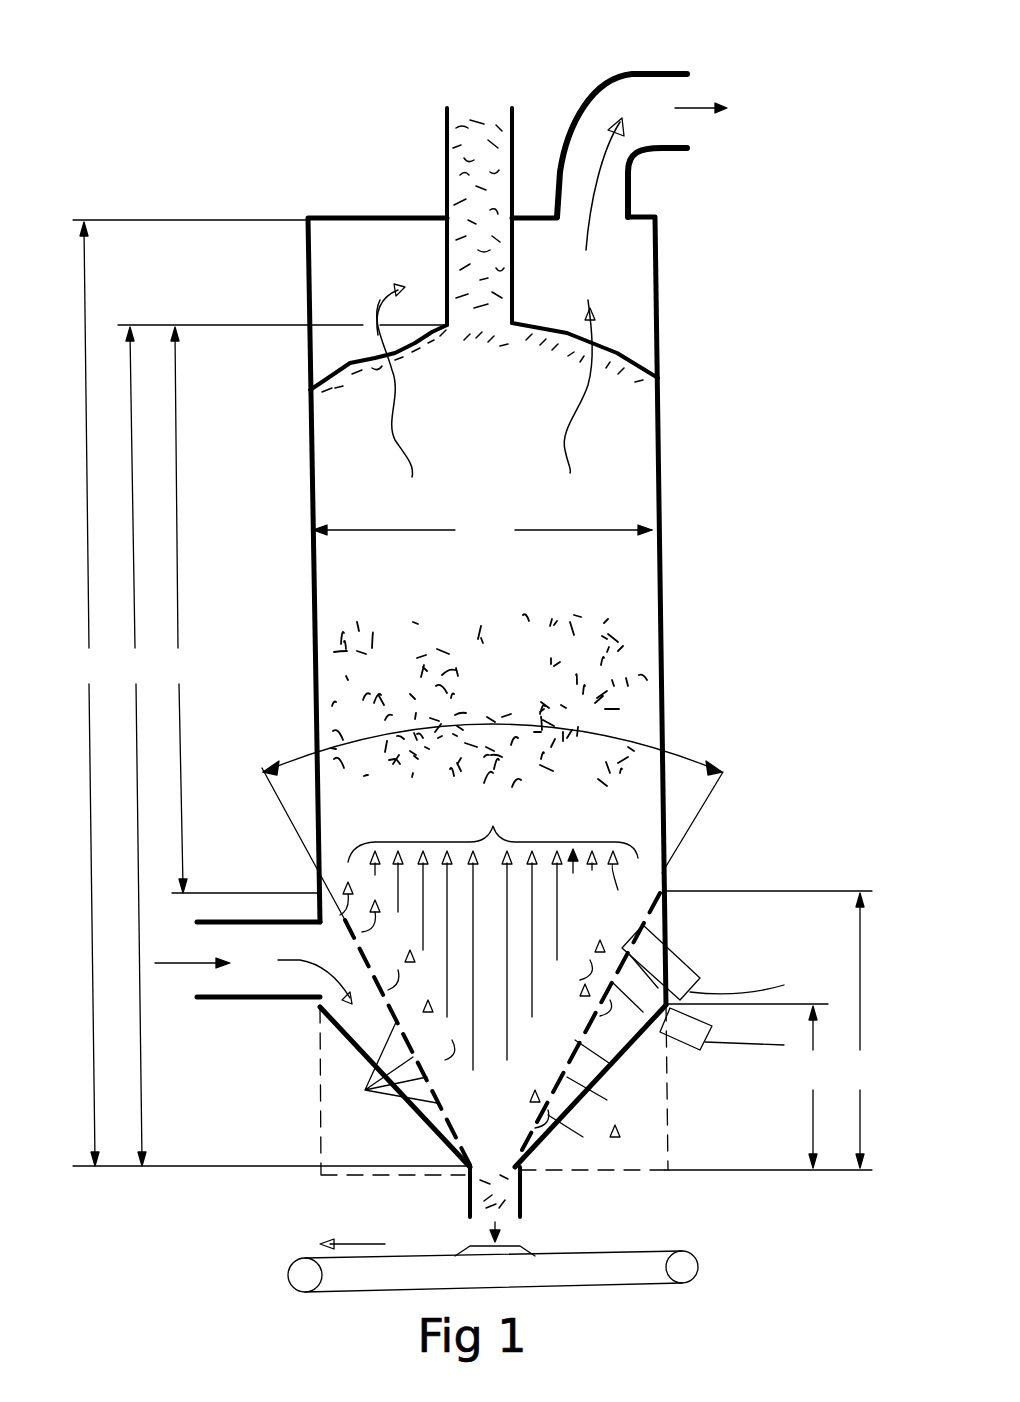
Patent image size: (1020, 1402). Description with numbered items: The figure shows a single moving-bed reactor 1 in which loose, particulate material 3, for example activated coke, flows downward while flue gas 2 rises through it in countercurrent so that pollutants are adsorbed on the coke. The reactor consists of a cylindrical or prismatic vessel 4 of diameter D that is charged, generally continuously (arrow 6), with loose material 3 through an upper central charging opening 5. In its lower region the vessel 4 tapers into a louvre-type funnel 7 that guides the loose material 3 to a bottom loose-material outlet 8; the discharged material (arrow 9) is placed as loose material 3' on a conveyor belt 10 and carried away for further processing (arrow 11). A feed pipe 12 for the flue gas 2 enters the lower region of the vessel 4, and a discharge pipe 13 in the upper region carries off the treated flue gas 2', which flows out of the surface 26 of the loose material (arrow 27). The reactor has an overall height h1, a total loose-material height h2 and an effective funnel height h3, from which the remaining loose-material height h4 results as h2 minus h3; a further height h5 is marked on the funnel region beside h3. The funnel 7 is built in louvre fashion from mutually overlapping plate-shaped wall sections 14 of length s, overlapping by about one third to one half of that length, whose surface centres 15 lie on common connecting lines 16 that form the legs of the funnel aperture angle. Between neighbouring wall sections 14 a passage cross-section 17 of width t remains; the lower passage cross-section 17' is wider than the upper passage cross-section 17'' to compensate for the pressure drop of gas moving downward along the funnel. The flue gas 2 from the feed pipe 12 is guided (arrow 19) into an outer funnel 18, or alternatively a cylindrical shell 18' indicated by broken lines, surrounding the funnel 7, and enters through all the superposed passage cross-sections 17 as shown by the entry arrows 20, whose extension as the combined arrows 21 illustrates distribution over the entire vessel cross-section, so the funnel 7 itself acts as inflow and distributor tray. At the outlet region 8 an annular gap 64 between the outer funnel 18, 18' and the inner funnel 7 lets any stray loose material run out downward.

The moving-bed reactor 1 is at (778, 440).
The flue gas 2 is at (192, 1009).
The treated flue gas 2' is at (666, 139).
The loose material 3 is at (506, 582).
The discharged loose material 3' is at (475, 1224).
The vessel 4 is at (664, 610).
The charging opening 5 is at (447, 163).
The charging arrow 6 is at (478, 108).
The louvre-type funnel 7 is at (600, 1041).
The loose-material outlet 8 is at (520, 1192).
The discharge arrow 9 is at (500, 1230).
The conveyor belt 10 is at (617, 1250).
The conveying arrow 11 is at (367, 1243).
The feed pipe 12 is at (240, 1000).
The discharge pipe 13 is at (637, 173).
The wall sections 14 is at (386, 1062).
The surface centres 15 is at (585, 1082).
The connecting line 16 is at (493, 813).
The passage cross-section 17 is at (669, 1031).
The lower passage cross-section 17' is at (614, 1139).
The upper passage cross-section 17'' is at (729, 920).
The outer funnel 18 is at (395, 1091).
The cylindrical shell 18' is at (644, 1087).
The gas guiding arrow 19 is at (345, 990).
The entry arrows 20 is at (480, 1009).
The combined arrows 21 is at (493, 935).
The surface of the loose material 26 is at (633, 363).
The outflow arrow 27 is at (381, 300).
The annular gap 64 is at (525, 1166).
The vessel diameter D is at (482, 530).
The overall height h1 is at (271, 693).
The total loose-material height h2 is at (282, 745).
The effective funnel height h3 is at (696, 1030).
The remaining loose-material height h4 is at (244, 610).
The height h5 is at (746, 1086).
The wall section length s is at (746, 1015).